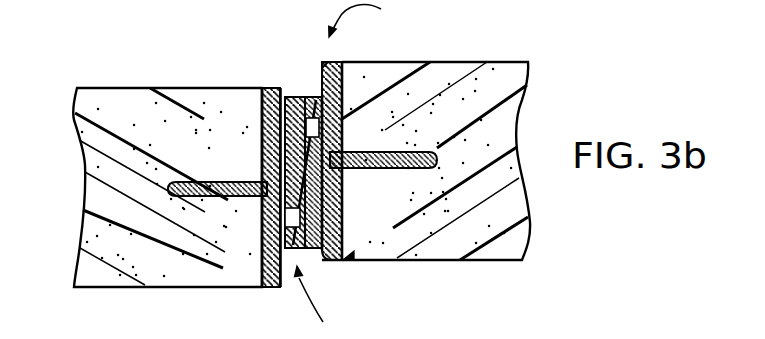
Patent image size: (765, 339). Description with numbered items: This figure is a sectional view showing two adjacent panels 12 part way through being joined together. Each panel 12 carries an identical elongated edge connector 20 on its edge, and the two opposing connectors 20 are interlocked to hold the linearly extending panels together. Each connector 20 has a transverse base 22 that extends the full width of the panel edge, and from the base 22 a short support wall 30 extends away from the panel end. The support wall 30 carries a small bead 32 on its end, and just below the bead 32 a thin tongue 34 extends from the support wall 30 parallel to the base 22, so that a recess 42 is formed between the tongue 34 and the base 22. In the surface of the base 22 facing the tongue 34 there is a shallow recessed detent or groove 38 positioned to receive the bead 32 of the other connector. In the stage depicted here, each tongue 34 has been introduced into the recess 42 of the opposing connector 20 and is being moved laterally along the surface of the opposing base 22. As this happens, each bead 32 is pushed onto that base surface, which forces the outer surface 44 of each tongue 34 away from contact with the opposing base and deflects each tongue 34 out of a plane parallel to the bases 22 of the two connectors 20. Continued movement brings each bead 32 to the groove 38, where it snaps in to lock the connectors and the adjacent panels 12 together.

The panel 12 is at (107, 88).
The edge connector 20 is at (357, 172).
The transverse base 22 is at (330, 62).
The support wall 30 is at (289, 97).
The bead 32 is at (262, 106).
The tongue 34 is at (338, 144).
The groove 38 is at (262, 135).
The recess 42 is at (312, 118).
The outer surface 44 is at (262, 197).